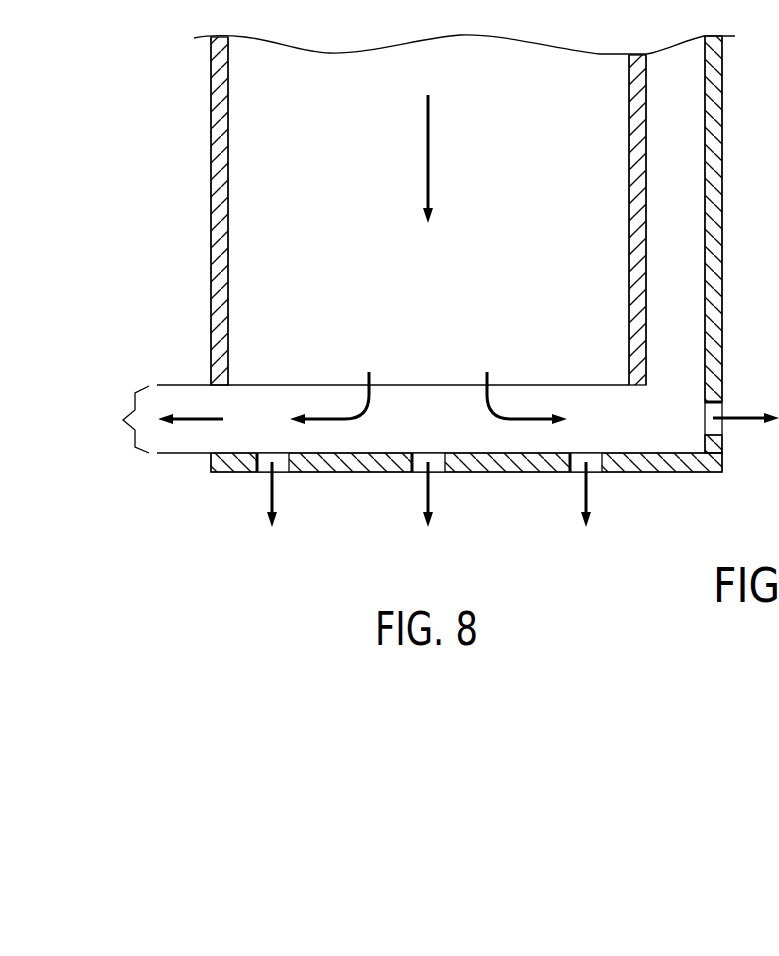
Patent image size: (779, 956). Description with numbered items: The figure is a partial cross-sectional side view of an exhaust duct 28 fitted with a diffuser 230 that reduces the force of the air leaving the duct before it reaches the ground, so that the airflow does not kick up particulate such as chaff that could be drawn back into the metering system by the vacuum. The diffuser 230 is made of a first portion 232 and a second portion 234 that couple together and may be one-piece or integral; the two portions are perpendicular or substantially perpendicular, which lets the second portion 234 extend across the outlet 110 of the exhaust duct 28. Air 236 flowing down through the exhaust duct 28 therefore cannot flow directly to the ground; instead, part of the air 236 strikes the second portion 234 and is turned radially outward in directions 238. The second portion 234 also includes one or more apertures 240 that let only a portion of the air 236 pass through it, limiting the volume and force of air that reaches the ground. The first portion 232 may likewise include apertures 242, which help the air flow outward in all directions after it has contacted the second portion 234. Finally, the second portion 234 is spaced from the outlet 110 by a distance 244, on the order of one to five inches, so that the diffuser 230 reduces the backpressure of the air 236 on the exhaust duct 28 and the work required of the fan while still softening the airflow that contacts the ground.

The exhaust duct 28 is at (228, 176).
The outlet 110 is at (275, 386).
The diffuser 230 is at (298, 554).
The first portion 232 is at (722, 222).
The second portion 234 is at (230, 472).
The air 236 is at (429, 155).
The directions 238 is at (197, 419).
The apertures 240 is at (284, 472).
The apertures 242 is at (722, 411).
The distance 244 is at (123, 420).